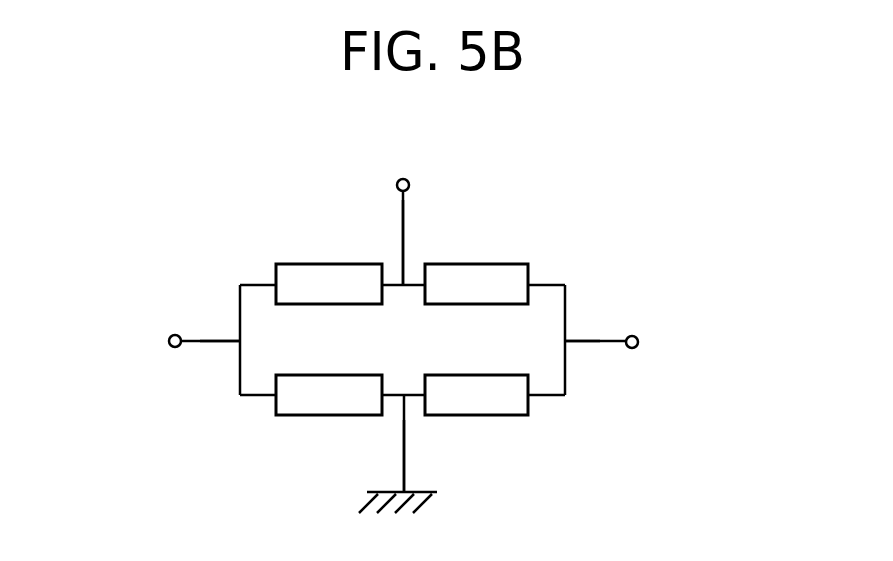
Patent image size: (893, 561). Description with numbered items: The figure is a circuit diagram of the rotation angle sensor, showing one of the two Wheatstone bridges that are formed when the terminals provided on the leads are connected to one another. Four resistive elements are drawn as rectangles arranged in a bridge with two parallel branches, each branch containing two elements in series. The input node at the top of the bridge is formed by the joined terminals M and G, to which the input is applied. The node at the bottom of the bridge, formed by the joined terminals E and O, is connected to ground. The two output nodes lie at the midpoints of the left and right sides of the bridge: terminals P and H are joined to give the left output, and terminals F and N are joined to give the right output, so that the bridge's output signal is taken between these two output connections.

The terminal M is at (403, 213).
The terminal G is at (417, 237).
The terminal P is at (142, 330).
The terminal H is at (212, 361).
The terminal F is at (664, 330).
The terminal N is at (590, 359).
The terminal E is at (398, 454).
The terminal O is at (419, 456).